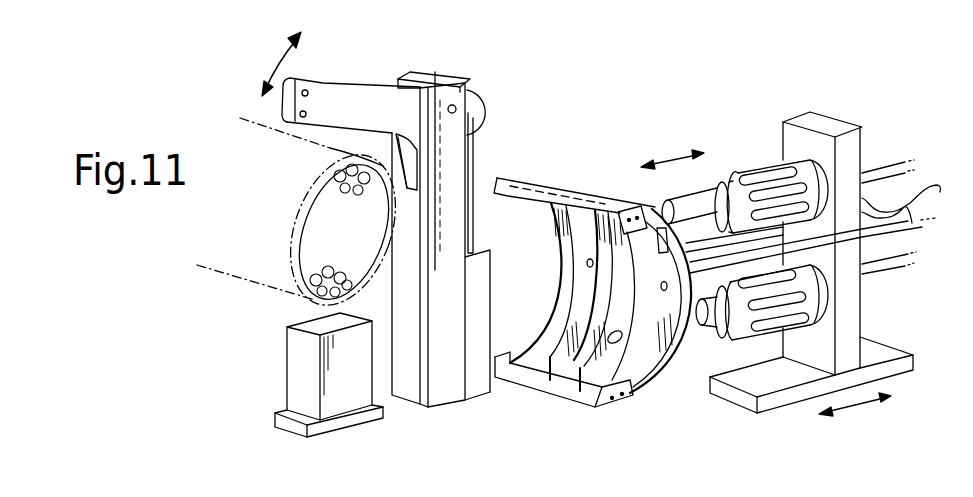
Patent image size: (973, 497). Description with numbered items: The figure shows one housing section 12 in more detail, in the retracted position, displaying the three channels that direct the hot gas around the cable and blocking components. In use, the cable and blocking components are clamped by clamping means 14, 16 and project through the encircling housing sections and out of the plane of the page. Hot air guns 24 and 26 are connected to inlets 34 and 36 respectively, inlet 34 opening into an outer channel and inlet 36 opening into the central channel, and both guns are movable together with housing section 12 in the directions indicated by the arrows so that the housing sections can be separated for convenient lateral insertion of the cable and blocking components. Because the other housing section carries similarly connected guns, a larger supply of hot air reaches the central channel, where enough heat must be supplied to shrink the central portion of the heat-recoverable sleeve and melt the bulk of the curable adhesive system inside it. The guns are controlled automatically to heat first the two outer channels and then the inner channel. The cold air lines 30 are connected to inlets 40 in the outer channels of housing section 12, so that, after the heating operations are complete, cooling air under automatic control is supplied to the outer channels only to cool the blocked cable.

The housing section 12 is at (592, 281).
The clamping means 14 is at (342, 97).
The clamping means 16 is at (332, 380).
The hot air gun 24 is at (742, 176).
The hot air gun 26 is at (732, 336).
The cold air line 30 is at (829, 213).
The inlet 34 is at (660, 252).
The inlet 36 is at (566, 386).
The inlets 40 is at (661, 288).